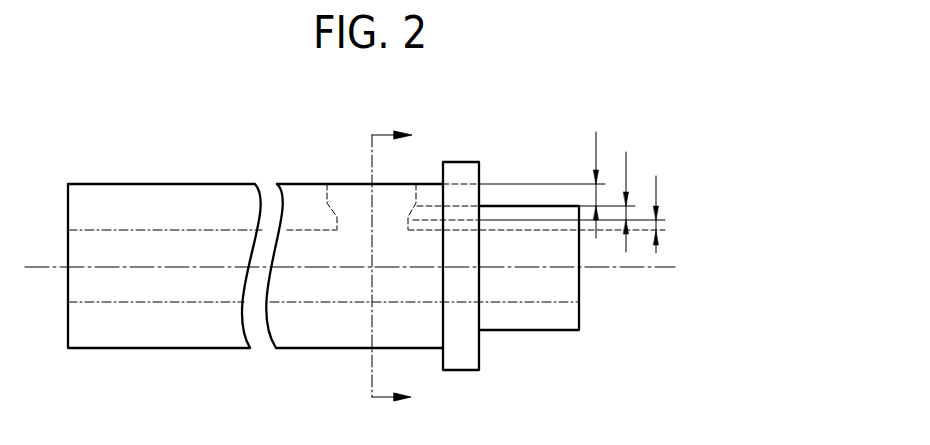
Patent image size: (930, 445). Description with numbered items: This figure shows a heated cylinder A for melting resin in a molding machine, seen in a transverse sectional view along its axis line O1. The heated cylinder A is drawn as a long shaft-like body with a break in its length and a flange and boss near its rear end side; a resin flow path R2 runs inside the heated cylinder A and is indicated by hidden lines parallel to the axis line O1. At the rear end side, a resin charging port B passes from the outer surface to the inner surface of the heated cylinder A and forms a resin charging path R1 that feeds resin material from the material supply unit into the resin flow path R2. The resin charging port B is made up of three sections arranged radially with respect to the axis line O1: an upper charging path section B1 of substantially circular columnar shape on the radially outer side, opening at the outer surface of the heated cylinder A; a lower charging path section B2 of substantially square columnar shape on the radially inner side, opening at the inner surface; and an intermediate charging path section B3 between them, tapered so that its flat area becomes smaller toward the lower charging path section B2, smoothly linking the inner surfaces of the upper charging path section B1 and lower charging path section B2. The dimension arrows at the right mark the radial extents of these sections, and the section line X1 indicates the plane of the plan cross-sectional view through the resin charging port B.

The heated cylinder A is at (211, 166).
The resin charging port B is at (422, 222).
The resin charging path R1 is at (345, 166).
The resin flow path R2 is at (157, 211).
The upper charging path section B1 is at (596, 142).
The lower charging path section B2 is at (656, 197).
The intermediate charging path section B3 is at (626, 170).
The section line X1 is at (408, 268).
The axis line O1 is at (370, 267).